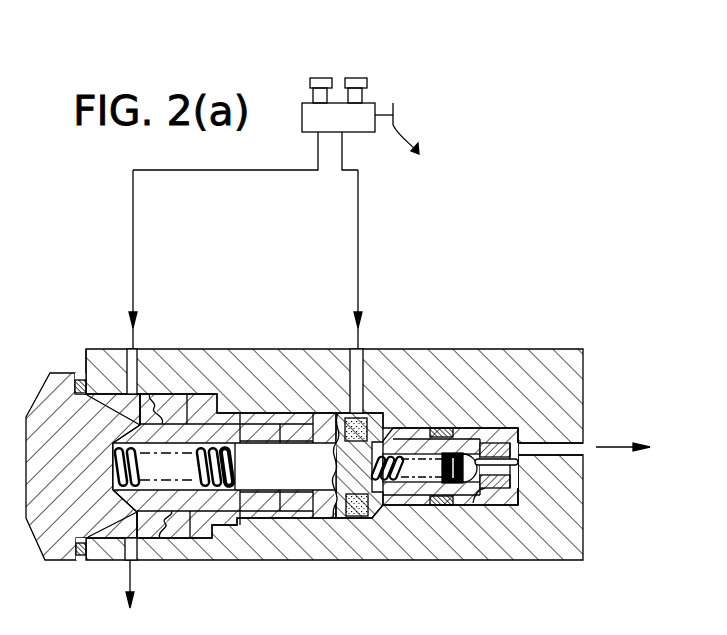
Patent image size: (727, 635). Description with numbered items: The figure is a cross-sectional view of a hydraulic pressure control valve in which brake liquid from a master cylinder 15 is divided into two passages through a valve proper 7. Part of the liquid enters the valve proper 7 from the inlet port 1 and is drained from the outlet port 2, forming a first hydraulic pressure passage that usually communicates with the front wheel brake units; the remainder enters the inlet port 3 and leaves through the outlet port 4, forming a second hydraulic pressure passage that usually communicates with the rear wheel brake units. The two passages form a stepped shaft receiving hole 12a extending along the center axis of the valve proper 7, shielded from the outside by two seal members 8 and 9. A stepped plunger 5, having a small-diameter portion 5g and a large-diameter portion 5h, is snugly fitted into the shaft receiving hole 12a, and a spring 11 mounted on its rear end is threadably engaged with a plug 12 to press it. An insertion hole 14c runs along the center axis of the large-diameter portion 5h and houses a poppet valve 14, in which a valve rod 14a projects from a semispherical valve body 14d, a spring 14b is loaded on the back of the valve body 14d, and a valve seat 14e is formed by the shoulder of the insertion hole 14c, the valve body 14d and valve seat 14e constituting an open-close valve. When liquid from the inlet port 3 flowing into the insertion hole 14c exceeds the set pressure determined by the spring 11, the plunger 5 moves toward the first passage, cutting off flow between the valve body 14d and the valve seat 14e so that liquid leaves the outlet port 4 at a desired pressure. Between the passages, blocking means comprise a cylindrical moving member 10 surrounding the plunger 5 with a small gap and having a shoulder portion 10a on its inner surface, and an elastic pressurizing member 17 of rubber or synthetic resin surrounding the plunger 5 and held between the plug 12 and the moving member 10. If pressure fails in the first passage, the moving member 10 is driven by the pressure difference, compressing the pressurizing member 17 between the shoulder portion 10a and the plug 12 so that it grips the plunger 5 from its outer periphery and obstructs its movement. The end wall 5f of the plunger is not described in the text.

The inlet port 1 is at (133, 353).
The outlet port 2 is at (128, 553).
The inlet port 3 is at (357, 350).
The outlet port 4 is at (585, 452).
The plunger 5 is at (417, 428).
The valve body end wall 5f is at (513, 528).
The small-diameter portion 5g is at (252, 472).
The large-diameter portion 5h is at (417, 494).
The valve proper 7 is at (565, 380).
The seal member 8 is at (330, 512).
The seal member 9 is at (178, 527).
The moving member 10 is at (203, 400).
The shoulder portion 10a is at (295, 420).
The spring 11 is at (82, 554).
The plug 12 is at (62, 518).
The shaft receiving hole 12a is at (152, 395).
The poppet valve 14 is at (466, 454).
The valve rod 14a is at (520, 466).
The spring 14b is at (395, 485).
The insertion hole 14c is at (457, 453).
The valve body 14d is at (465, 494).
The valve seat 14e is at (479, 443).
The master cylinder 15 is at (363, 123).
The pressurizing member 17 is at (250, 420).